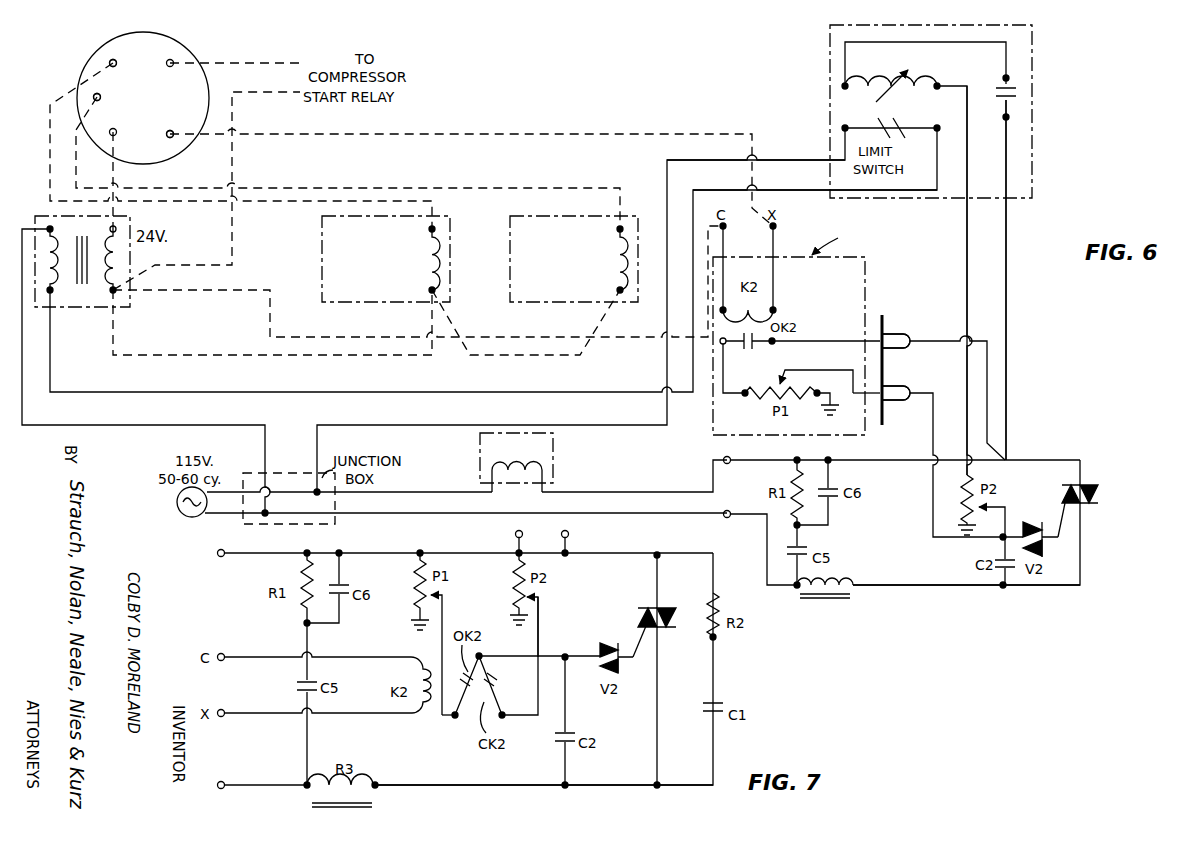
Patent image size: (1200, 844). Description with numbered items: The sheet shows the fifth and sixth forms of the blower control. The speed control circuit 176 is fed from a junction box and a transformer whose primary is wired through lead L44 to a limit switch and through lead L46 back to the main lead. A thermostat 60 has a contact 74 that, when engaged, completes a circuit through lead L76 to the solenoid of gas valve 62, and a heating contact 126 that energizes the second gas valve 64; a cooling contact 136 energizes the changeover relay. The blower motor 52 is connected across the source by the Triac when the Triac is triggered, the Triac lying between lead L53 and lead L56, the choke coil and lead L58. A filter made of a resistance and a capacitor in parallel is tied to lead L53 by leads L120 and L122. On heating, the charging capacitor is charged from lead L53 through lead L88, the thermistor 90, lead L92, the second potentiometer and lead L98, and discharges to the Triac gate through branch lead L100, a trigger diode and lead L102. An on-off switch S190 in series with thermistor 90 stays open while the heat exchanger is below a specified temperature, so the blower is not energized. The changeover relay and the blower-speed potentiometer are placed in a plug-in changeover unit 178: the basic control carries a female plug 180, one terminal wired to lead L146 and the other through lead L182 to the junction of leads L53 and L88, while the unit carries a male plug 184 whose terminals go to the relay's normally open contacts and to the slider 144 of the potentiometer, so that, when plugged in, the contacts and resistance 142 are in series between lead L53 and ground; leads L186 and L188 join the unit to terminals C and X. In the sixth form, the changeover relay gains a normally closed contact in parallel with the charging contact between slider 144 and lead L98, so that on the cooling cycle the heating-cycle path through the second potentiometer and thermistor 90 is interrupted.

In FIG. 6, the thermostat 60 is at (84, 66).
In FIG. 6, the contact 74 is at (117, 61).
In FIG. 6, the heating contact 126 is at (101, 95).
In FIG. 6, the contact 136 is at (166, 132).
In FIG. 6, the lead L76 is at (50, 146).
In FIG. 6, the speed control circuit 176 is at (577, 118).
In FIG. 6, the gas valve 62 is at (322, 234).
In FIG. 6, the second gas valve 64 is at (510, 234).
In FIG. 6, the motor 52 is at (555, 449).
In FIG. 6, the lead L46 is at (796, 158).
In FIG. 6, the lead L44 is at (765, 190).
In FIG. 6, the thermistor 90 is at (895, 92).
In FIG. 6, the on-off switch S190 is at (1020, 92).
In FIG. 6, the lead L188 is at (774, 244).
In FIG. 6, the lead L186 is at (723, 250).
In FIG. 6, the changeover unit 178 is at (872, 296).
In FIG. 6, the male plug 184 is at (878, 393).
In FIG. 6, the female plug 180 is at (888, 372).
In FIG. 6, the lead L182 is at (940, 345).
In FIG. 6, the lead L92 is at (967, 269).
In FIG. 7, the lead L92 is at (516, 549).
In FIG. 6, the lead L88 is at (1010, 268).
In FIG. 7, the lead L88 is at (569, 546).
In FIG. 6, the resistance 142 is at (760, 379).
In FIG. 6, the slider 144 is at (783, 371).
In FIG. 6, the lead L53 is at (907, 460).
In FIG. 7, the lead L53 is at (245, 553).
In FIG. 6, the lead L146 is at (933, 511).
In FIG. 6, the lead L98 is at (1003, 524).
In FIG. 7, the lead L98 is at (541, 612).
In FIG. 6, the branch lead L100 is at (1017, 537).
In FIG. 7, the branch lead L100 is at (580, 657).
In FIG. 6, the lead L102 is at (1068, 528).
In FIG. 7, the lead L102 is at (652, 640).
In FIG. 6, the lead L56 is at (905, 586).
In FIG. 7, the lead L56 is at (472, 785).
In FIG. 7, the lead L120 is at (304, 563).
In FIG. 7, the lead L122 is at (340, 570).
In FIG. 7, the lead L58 is at (268, 785).